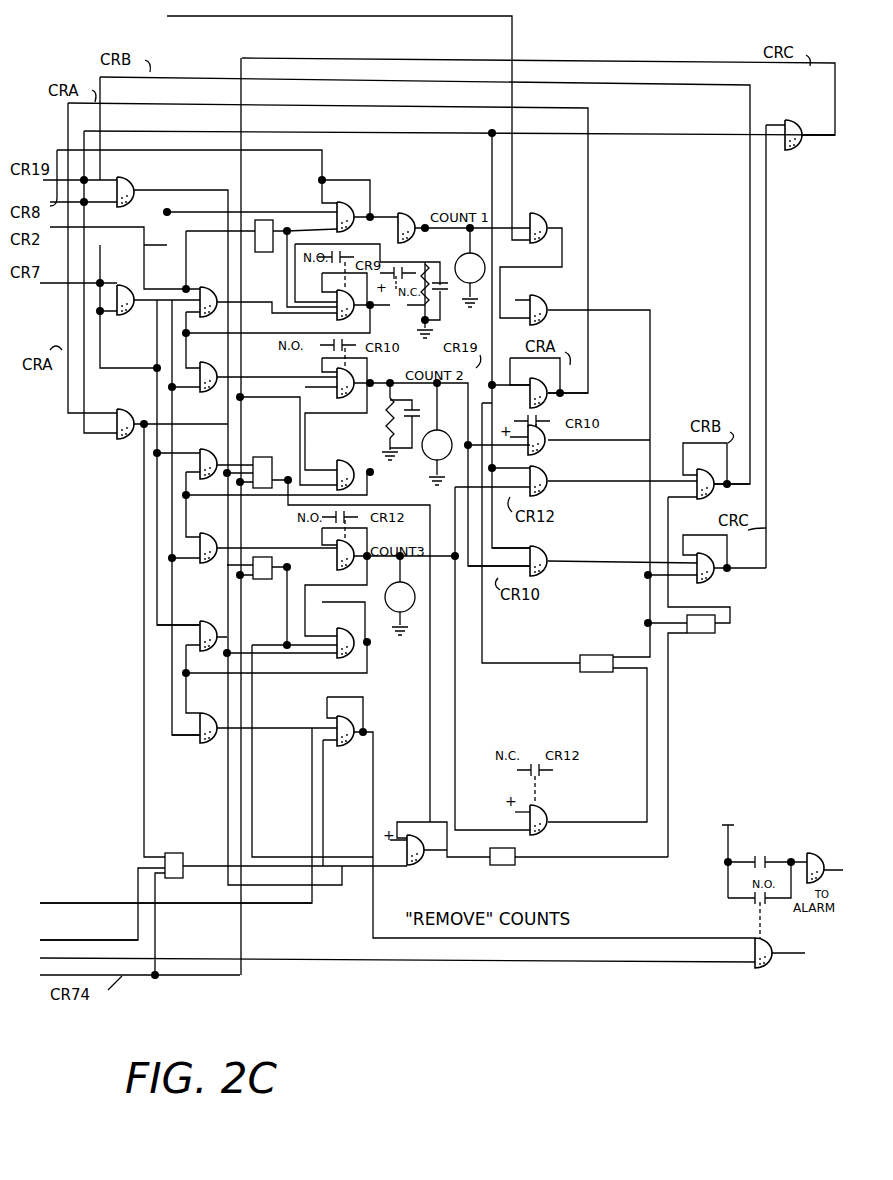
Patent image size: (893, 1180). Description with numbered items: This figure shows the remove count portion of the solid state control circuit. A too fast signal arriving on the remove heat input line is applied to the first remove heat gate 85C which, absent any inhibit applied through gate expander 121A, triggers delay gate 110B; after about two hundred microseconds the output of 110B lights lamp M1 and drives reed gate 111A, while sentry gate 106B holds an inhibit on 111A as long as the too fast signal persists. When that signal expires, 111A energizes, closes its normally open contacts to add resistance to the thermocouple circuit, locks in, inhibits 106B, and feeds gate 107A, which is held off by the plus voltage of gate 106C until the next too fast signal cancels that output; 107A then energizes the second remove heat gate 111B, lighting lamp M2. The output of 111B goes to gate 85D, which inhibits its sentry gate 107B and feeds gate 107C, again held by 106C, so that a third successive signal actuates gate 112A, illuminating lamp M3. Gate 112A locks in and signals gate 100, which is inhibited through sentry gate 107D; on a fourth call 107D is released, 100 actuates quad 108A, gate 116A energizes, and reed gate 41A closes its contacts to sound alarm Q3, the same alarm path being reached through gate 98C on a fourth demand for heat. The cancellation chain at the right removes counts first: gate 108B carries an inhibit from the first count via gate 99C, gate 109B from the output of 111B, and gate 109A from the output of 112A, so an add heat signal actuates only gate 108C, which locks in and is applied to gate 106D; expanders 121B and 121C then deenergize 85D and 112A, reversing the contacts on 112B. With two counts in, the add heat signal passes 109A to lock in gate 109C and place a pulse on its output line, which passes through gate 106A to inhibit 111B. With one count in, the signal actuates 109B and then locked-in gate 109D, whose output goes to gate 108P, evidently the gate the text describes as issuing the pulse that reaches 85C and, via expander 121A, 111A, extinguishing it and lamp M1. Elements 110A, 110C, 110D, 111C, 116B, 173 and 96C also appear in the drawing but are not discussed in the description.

The gate 106A is at (137, 183).
The sentry gate 106B is at (209, 291).
The gate 106C is at (124, 289).
The gate 106D is at (128, 414).
The gate 107A is at (208, 368).
The sentry gate 107B is at (206, 457).
The gate 107C is at (206, 540).
The sentry gate 107D is at (205, 626).
The quad 108A is at (193, 742).
The gate 108B is at (537, 303).
The gate 108C is at (562, 398).
The AND gate 108P is at (814, 148).
The gate 109A is at (562, 476).
The gate 109B is at (562, 553).
The gate 109C is at (726, 491).
The gate 109D is at (727, 577).
The delay element 110A is at (522, 869).
The delay gate 110B is at (418, 215).
The delay element 110C is at (602, 679).
The delay element 110D is at (721, 637).
The reed gate 111A is at (335, 315).
The second remove heat gate 111B is at (333, 383).
The latch gate 111C is at (563, 440).
The gate 112A is at (333, 565).
The gate 112B is at (562, 828).
The gate 116A is at (350, 752).
The AND gate 116B is at (435, 862).
The gate expander 121A is at (266, 252).
The gate expander 121B is at (283, 440).
The gate expander 121C is at (268, 579).
The first remove heat gate 85C is at (346, 194).
The gate 85D is at (341, 466).
The gate 99C is at (545, 215).
The gate 100 is at (339, 632).
The relay coil 173 is at (174, 853).
The reed gate 41A is at (789, 961).
The gate 98C is at (176, 892).
The input line 96C is at (89, 930).
The alarm Q3 is at (813, 854).
The lamp M1 is at (470, 268).
The lamp M2 is at (437, 445).
The lamp M3 is at (400, 597).